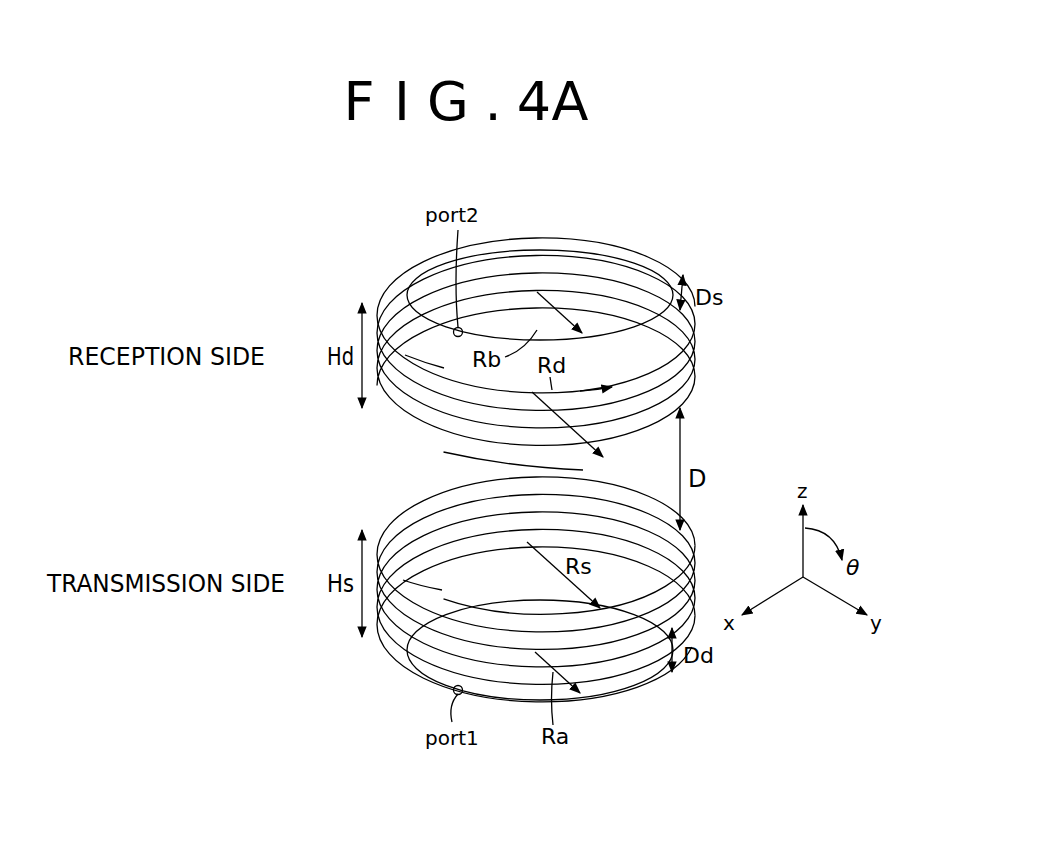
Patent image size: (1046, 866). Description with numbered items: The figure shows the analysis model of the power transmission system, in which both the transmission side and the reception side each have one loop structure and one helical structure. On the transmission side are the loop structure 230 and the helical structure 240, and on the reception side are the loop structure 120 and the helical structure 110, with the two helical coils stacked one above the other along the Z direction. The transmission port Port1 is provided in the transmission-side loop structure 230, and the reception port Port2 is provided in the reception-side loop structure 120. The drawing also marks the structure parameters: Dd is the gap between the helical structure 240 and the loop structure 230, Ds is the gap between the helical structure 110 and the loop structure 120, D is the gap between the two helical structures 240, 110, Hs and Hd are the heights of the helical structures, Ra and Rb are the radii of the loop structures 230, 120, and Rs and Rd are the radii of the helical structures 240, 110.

The helical structure 110 is at (697, 355).
The loop structure 120 is at (614, 246).
The loop structure 230 is at (628, 686).
The helical structure 240 is at (697, 560).